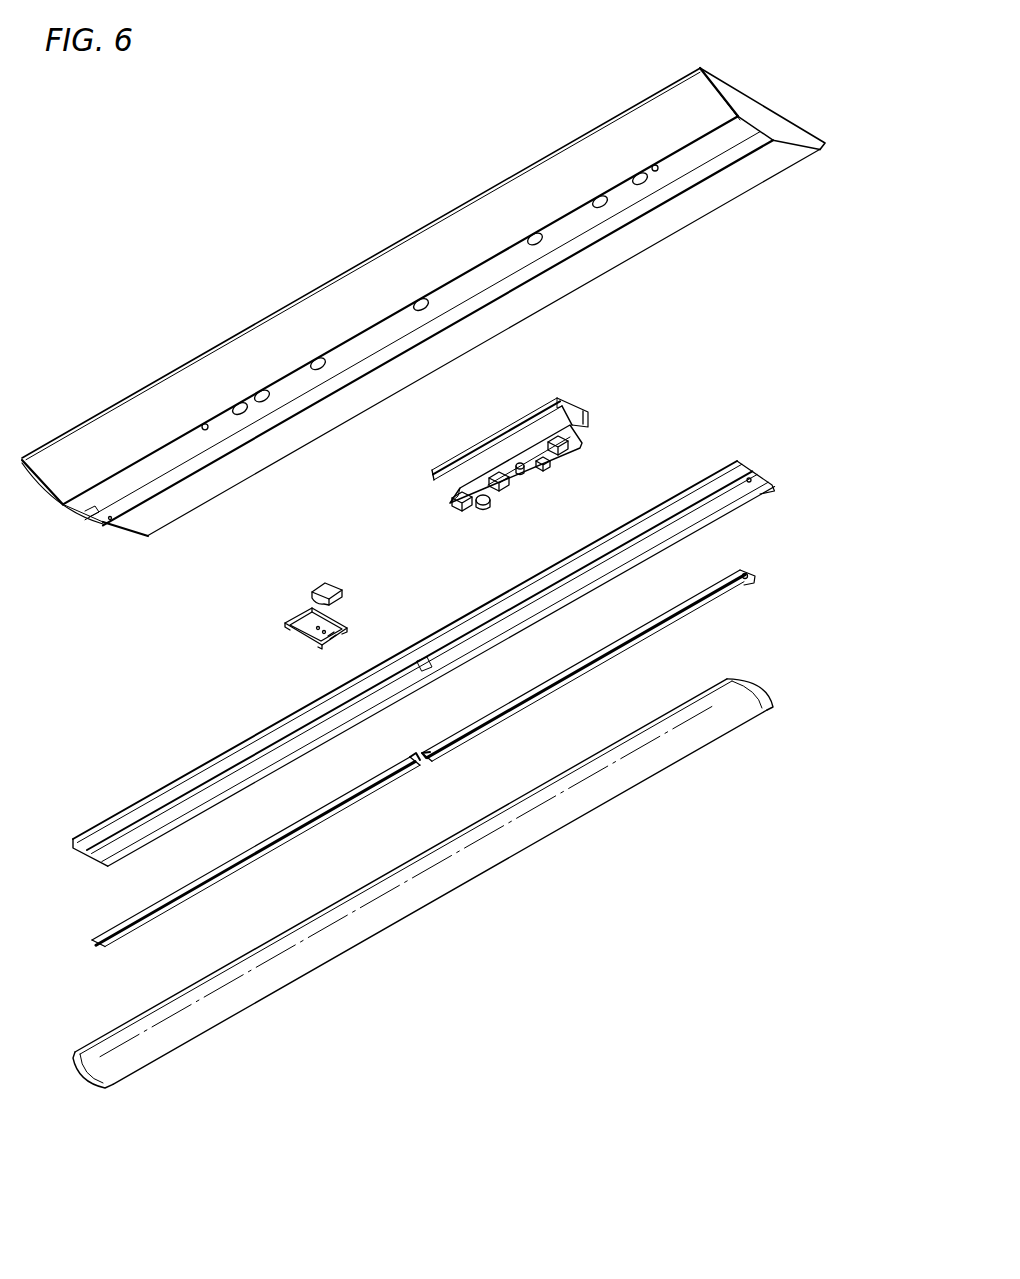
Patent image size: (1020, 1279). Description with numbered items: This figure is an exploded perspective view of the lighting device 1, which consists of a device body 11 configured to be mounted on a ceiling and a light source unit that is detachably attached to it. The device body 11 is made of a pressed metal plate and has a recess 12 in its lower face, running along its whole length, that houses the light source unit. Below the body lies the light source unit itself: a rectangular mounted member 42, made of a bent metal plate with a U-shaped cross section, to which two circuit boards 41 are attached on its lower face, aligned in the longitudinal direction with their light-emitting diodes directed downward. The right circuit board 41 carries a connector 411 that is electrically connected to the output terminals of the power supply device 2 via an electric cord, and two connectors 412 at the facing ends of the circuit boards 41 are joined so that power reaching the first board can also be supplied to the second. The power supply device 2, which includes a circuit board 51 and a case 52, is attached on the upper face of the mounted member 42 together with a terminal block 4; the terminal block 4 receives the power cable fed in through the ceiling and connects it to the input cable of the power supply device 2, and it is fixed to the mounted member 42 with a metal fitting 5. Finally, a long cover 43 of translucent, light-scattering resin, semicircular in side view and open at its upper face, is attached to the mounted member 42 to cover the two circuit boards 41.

The lighting device 1 is at (393, 243).
The device body 11 is at (168, 390).
The recess 12 is at (147, 468).
The power supply device 2 is at (445, 497).
The terminal block 4 is at (318, 585).
The metal fitting 5 is at (300, 630).
The circuit board 41 is at (655, 632).
The connector 411 is at (747, 573).
The connector 412 is at (420, 767).
The mounted member 42 is at (693, 483).
The cover 43 is at (660, 775).
The circuit board 51 is at (573, 452).
The case 52 is at (510, 425).